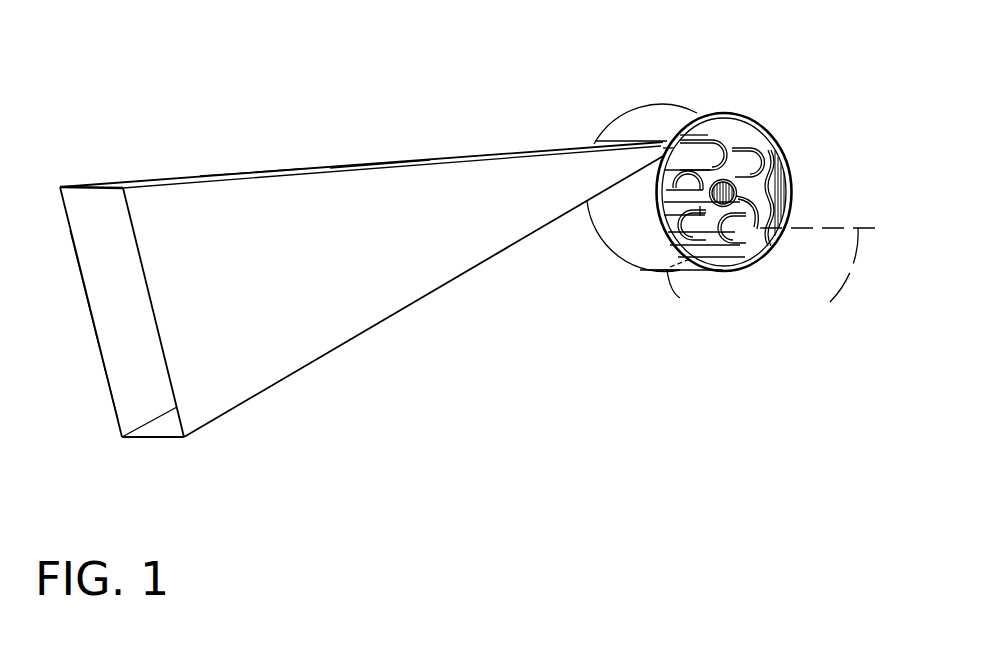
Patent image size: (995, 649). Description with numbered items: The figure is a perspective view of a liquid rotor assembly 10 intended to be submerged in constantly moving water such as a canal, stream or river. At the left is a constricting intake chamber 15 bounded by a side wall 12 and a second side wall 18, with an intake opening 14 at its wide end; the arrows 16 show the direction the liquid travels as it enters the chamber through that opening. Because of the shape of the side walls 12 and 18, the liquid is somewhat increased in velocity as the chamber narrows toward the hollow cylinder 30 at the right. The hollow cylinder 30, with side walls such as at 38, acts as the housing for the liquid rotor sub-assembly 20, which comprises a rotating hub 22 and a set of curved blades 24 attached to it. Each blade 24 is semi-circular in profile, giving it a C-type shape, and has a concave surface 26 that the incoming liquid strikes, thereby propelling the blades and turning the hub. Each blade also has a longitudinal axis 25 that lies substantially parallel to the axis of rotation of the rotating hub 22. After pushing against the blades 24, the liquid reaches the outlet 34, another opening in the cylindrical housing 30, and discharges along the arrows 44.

The liquid rotor assembly 10 is at (232, 128).
The side wall 12 is at (272, 282).
The intake opening 14 is at (110, 293).
The intake chamber 15 is at (384, 148).
The arrows 16 is at (120, 335).
The second side wall 18 is at (116, 239).
The liquid rotor sub-assembly 20 is at (752, 100).
The rotating hub 22 is at (748, 210).
The blades 24 is at (722, 140).
The longitudinal axis 25 is at (830, 302).
The concave surface 26 is at (687, 155).
The hollow cylinder 30 is at (643, 227).
The outlet 34 is at (657, 280).
The side wall 38 is at (783, 205).
The arrows 44 is at (698, 302).